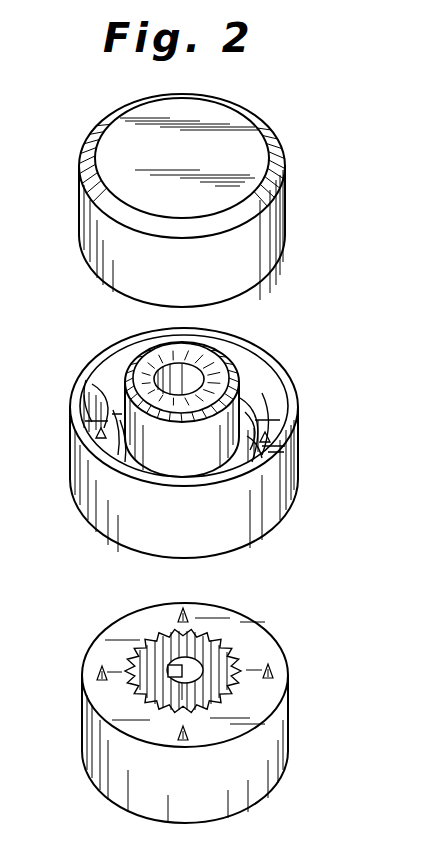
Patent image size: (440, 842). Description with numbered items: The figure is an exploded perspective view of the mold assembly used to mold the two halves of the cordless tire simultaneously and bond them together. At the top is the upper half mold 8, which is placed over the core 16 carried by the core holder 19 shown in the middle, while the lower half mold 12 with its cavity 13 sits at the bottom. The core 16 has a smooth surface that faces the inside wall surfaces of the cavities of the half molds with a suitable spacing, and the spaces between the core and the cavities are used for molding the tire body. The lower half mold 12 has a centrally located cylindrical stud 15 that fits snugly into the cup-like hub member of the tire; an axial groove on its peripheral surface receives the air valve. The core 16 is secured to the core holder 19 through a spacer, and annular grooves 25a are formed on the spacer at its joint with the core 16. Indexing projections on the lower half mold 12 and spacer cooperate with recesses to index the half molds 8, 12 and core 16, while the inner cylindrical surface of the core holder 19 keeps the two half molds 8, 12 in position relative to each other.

The upper half mold 8 is at (80, 216).
The lower half mold 12 is at (92, 737).
The cavity 13 is at (193, 642).
The cylindrical stud 15 is at (200, 670).
The core 16 is at (218, 368).
The core holder 19 is at (292, 401).
The annular grooves 25a is at (248, 437).